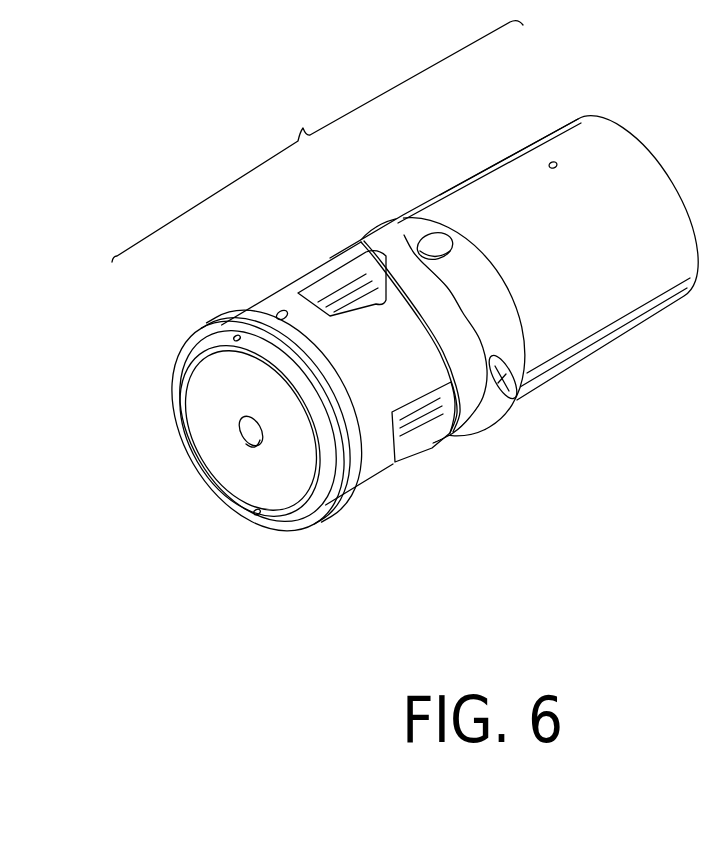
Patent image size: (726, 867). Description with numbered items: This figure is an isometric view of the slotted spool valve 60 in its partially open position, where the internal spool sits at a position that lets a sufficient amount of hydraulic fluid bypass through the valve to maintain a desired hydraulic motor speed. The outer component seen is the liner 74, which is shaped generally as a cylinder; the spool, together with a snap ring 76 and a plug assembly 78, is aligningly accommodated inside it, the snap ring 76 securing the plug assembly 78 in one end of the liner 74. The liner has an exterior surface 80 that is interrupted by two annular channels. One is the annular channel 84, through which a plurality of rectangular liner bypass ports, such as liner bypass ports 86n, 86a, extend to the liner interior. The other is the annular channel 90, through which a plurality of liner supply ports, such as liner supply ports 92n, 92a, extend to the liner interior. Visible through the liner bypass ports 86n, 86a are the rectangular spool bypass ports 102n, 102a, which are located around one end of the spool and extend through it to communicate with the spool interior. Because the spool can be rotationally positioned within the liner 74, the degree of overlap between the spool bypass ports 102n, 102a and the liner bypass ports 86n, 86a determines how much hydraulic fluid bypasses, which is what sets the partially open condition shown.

The slotted spool valve 60 is at (317, 141).
The liner 74 is at (455, 188).
The snap ring 76 is at (241, 426).
The plug assembly 78 is at (239, 431).
The exterior surface 80 is at (569, 268).
The annular channel 84 is at (282, 360).
The liner bypass port 86n is at (298, 271).
The liner bypass port 86a is at (390, 498).
The annular channel 90 is at (393, 324).
The liner supply port 92n is at (389, 218).
The liner supply port 92a is at (552, 398).
The spool bypass port 102n is at (287, 282).
The spool bypass port 102a is at (375, 479).